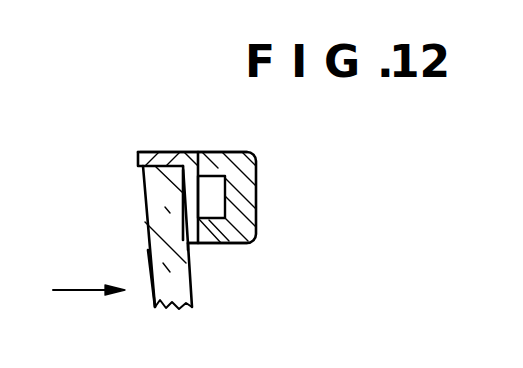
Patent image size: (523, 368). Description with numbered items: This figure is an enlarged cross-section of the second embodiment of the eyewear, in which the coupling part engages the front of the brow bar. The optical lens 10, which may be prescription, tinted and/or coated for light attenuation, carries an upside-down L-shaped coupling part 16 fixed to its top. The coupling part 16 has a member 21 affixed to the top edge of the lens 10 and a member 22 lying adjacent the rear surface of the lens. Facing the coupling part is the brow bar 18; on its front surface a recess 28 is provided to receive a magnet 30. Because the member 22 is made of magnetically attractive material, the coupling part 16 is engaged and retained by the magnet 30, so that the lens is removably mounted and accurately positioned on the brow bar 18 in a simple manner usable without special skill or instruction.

The first optical lens 10 is at (153, 298).
The coupling part 16 is at (157, 136).
The brow bar 18 is at (238, 171).
The member 21 is at (187, 150).
The member 22 is at (195, 191).
The recess 28 is at (222, 243).
The magnet 30 is at (225, 208).